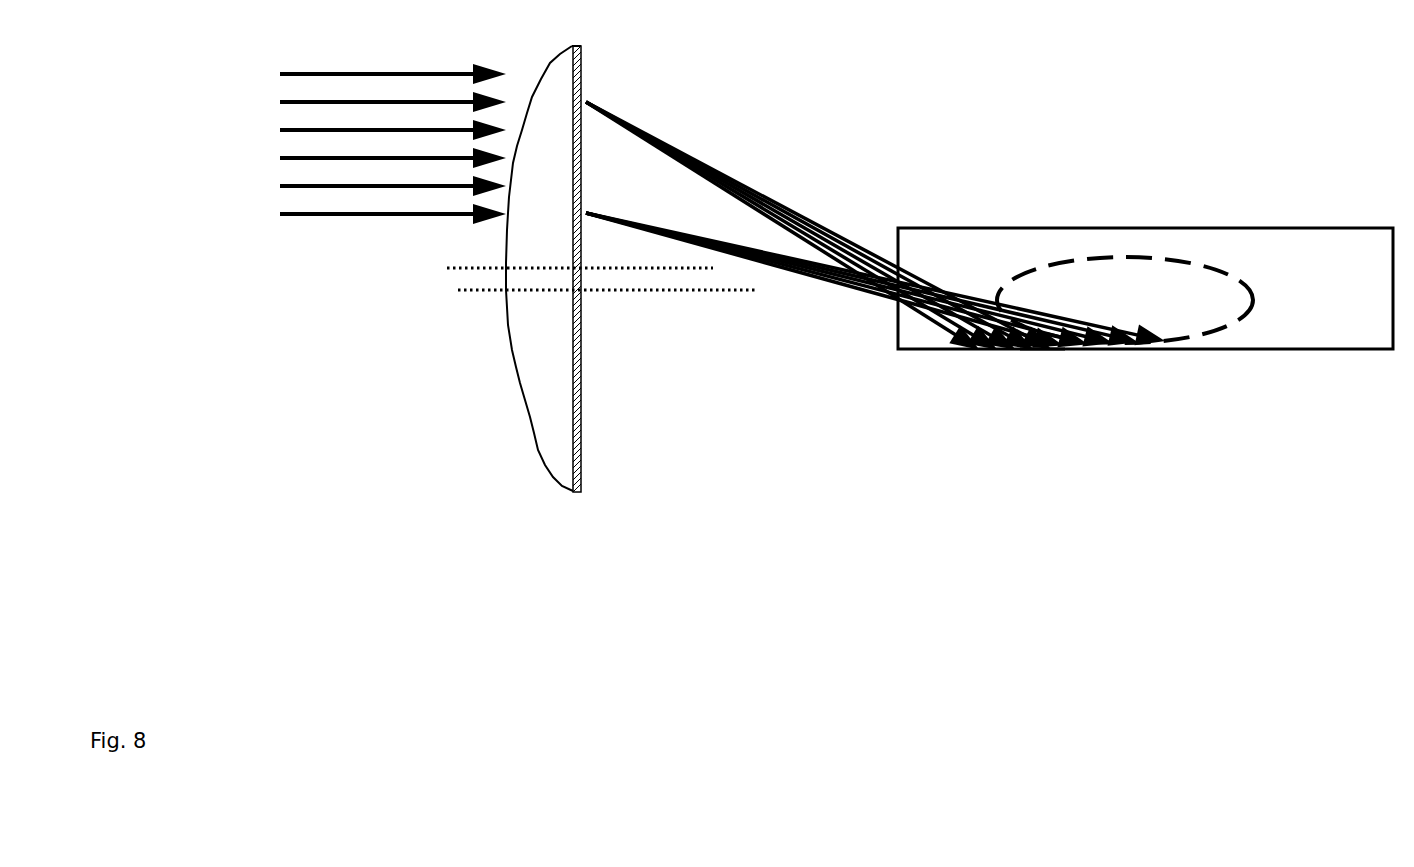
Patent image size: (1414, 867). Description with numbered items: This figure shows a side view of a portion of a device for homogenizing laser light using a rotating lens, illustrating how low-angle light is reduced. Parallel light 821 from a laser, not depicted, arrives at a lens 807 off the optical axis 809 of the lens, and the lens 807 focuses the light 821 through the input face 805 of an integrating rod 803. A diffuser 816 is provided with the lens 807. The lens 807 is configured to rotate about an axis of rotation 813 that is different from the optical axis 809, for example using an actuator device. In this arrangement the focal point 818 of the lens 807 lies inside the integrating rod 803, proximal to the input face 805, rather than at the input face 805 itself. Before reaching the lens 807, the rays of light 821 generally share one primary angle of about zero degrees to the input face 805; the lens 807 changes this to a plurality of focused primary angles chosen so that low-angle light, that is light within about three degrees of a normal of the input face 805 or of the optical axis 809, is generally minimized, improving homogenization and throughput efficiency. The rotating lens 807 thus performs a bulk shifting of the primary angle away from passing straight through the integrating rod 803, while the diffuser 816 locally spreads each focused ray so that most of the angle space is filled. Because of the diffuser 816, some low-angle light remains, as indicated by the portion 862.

The light 821 is at (302, 217).
The lens 807 is at (538, 450).
The diffuser 816 is at (583, 413).
The optical axis 809 is at (447, 268).
The axis of rotation 813 is at (477, 292).
The input face 805 is at (897, 345).
The portion 862 is at (1213, 333).
The focal point 818 is at (943, 271).
The integrating rod 803 is at (1057, 350).